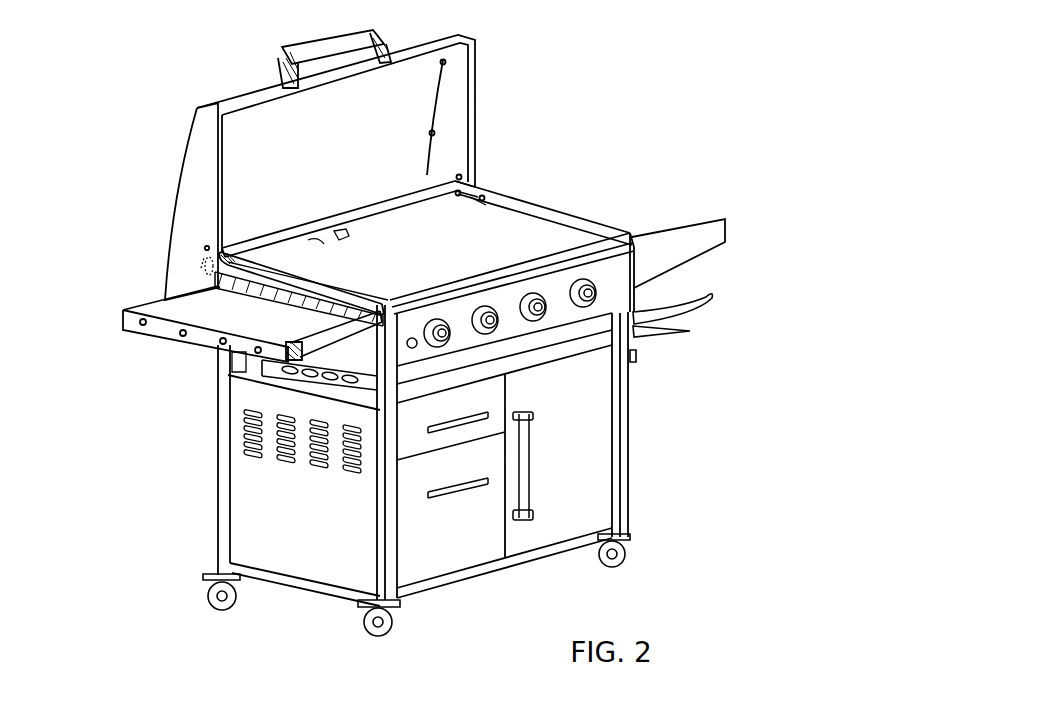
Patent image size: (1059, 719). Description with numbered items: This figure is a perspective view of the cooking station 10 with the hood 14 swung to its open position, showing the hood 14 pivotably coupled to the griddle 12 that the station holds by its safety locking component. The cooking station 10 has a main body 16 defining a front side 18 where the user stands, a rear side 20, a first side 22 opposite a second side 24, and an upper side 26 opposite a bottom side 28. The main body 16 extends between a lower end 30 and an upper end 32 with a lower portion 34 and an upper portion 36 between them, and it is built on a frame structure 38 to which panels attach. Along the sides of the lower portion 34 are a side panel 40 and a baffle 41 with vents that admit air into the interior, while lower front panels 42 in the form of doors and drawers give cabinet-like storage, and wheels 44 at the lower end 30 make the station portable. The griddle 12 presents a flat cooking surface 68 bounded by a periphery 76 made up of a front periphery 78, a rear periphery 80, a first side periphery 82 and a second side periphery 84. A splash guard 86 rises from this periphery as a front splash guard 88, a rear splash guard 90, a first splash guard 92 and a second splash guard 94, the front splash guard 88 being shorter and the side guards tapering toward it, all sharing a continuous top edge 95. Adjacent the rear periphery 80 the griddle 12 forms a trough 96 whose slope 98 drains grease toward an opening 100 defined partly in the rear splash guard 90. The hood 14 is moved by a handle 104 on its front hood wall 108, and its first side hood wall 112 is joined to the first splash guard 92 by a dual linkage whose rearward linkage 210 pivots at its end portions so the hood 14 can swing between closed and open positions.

The cooking station 10 is at (93, 120).
The griddle 12 is at (443, 206).
The hood 14 is at (338, 150).
The main body 16 is at (657, 363).
The front side 18 is at (420, 442).
The rear side 20 is at (167, 368).
The first side 22 is at (247, 492).
The second side 24 is at (637, 393).
The upper side 26 is at (495, 163).
The bottom side 28 is at (427, 600).
The lower end 30 is at (490, 570).
The upper end 32 is at (633, 252).
The lower portion 34 is at (707, 343).
The upper portion 36 is at (665, 290).
The frame structure 38 is at (383, 522).
The side panel 40 is at (243, 538).
The baffle 41 is at (263, 363).
The lower front panel 42 is at (597, 510).
The wheel 44 is at (373, 632).
The flat cooking surface 68 is at (527, 230).
The periphery 76 is at (547, 228).
The front periphery 78 is at (553, 250).
The rear periphery 80 is at (397, 223).
The first side periphery 82 is at (333, 288).
The second side periphery 84 is at (485, 207).
The splash guard 86 is at (562, 200).
The front splash guard 88 is at (413, 283).
The rear splash guard 90 is at (388, 203).
The first splash guard 92 is at (292, 271).
The second splash guard 94 is at (607, 228).
The top edge 95 is at (247, 240).
The trough 96 is at (313, 243).
The slope 98 is at (350, 235).
The opening 100 is at (337, 233).
The handle 104 is at (315, 53).
The front hood wall 108 is at (424, 53).
The first side hood wall 112 is at (197, 168).
The rearward linkage 210 is at (207, 272).